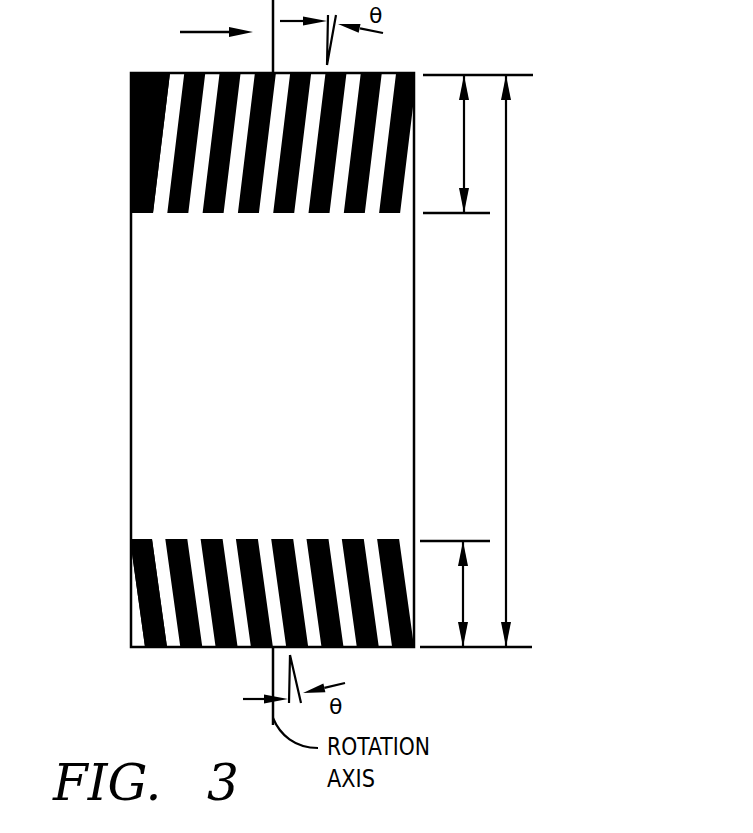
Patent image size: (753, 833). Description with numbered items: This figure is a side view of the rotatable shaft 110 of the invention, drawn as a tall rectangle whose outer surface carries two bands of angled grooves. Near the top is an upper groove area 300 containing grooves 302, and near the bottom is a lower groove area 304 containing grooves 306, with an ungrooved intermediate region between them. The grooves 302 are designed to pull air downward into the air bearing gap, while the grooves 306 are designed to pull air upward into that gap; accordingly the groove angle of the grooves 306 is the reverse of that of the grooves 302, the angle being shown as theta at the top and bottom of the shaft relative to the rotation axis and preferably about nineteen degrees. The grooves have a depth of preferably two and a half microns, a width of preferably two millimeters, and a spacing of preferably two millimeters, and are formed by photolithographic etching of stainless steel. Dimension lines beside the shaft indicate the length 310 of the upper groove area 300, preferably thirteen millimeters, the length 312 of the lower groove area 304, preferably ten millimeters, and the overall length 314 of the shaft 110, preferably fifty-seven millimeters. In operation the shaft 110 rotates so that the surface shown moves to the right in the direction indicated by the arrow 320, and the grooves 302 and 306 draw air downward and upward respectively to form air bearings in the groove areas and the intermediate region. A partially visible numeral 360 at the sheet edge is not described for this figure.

The shaft 110 is at (131, 370).
The upper groove area 300 is at (131, 97).
The grooves 302 is at (131, 142).
The lower groove area 304 is at (131, 583).
The grooves 306 is at (131, 627).
The length 310 is at (465, 130).
The length 312 is at (463, 598).
The length 314 is at (506, 365).
The arrow 320 is at (195, 32).
The partially visible reference numeral 360 is at (541, 826).